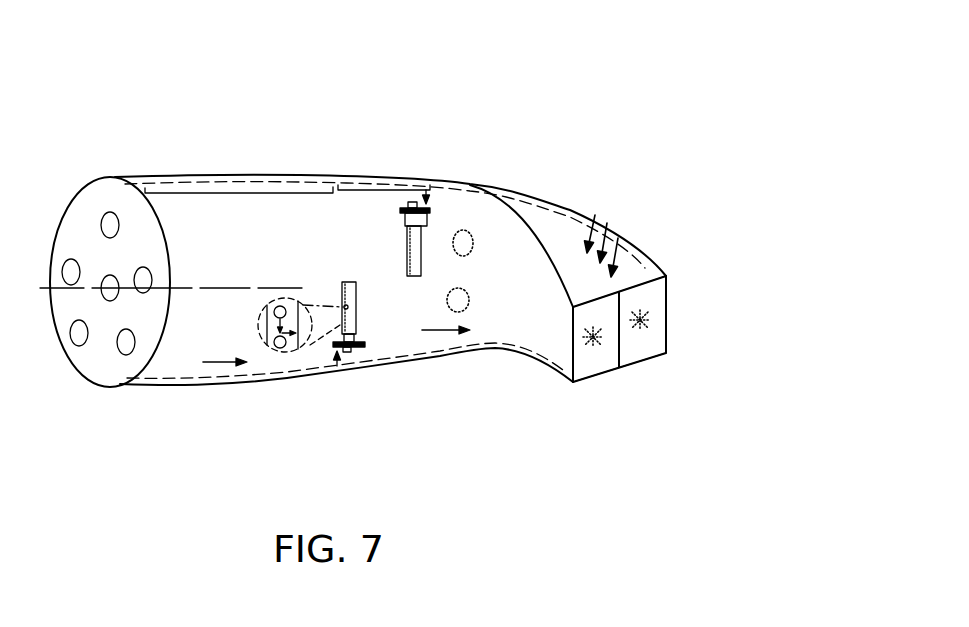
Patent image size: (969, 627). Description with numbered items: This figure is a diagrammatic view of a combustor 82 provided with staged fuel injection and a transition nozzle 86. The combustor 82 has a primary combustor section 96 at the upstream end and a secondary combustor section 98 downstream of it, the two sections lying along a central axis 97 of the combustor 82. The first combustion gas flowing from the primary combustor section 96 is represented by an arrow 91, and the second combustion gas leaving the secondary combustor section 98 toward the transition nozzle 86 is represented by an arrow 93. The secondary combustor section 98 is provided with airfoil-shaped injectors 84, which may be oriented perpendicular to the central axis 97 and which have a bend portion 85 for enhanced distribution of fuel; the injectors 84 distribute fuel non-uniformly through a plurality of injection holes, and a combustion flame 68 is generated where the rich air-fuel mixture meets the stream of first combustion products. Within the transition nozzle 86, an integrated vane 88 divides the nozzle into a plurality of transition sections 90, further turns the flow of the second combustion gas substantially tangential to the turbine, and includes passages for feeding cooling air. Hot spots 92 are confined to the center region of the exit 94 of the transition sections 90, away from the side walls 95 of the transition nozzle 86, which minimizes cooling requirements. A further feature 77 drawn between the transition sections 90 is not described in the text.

The combustor 82 is at (602, 72).
The transition nozzle 86 is at (622, 188).
The integrated vane 88 is at (618, 293).
The transition sections 90 is at (603, 286).
The divider 77 is at (620, 302).
The side walls 95 is at (667, 330).
The hot spots 92 is at (640, 330).
The exit 94 is at (583, 372).
The second combustion gas arrow 93 is at (435, 331).
The combustion flame 68 is at (470, 258).
The injectors 84 is at (407, 268).
The bend portion 85 is at (406, 249).
The first combustion gas arrow 91 is at (205, 362).
The primary combustor section 96 is at (242, 193).
The central axis 97 is at (252, 288).
The secondary combustor section 98 is at (363, 190).